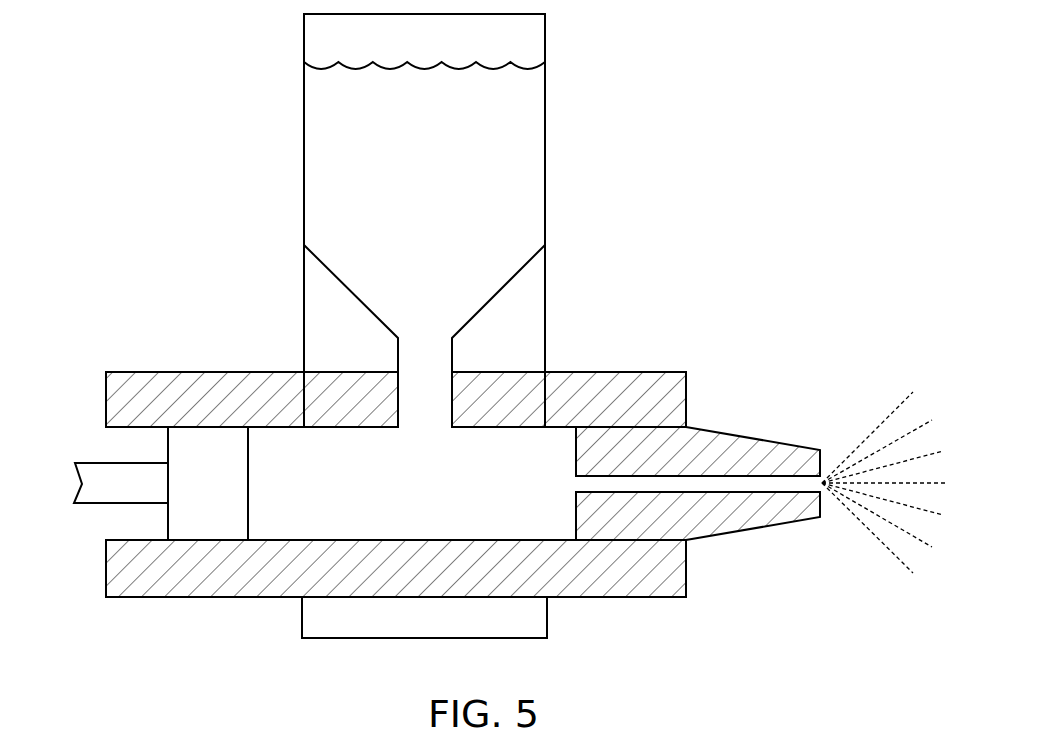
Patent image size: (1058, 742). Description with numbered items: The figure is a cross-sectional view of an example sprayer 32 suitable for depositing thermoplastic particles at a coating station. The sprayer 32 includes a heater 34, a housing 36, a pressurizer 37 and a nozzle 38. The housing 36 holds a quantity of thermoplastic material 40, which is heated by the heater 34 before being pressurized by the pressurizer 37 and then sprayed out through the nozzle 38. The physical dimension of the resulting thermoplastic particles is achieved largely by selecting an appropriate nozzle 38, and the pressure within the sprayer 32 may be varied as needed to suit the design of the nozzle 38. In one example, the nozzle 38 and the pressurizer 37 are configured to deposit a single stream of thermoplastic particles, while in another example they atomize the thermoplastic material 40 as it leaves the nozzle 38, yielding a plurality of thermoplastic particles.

The sprayer 32 is at (148, 165).
The heater 34 is at (325, 640).
The housing 36 is at (602, 389).
The pressurizer 37 is at (90, 497).
The nozzle 38 is at (728, 513).
The thermoplastic material 40 is at (524, 160).